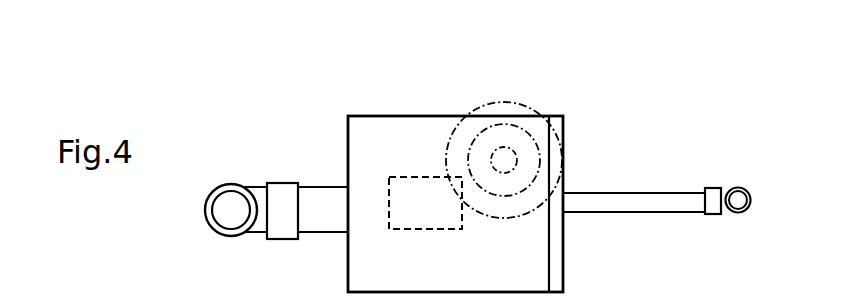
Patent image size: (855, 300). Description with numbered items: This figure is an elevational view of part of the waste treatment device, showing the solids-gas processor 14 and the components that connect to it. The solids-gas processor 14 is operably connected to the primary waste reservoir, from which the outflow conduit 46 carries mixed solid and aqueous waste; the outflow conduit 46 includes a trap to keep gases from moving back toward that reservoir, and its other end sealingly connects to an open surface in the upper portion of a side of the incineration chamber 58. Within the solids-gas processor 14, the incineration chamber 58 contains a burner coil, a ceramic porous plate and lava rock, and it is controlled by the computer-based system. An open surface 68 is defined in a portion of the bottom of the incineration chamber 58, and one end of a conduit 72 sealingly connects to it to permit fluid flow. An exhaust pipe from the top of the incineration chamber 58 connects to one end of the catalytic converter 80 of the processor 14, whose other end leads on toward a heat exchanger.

The solids-gas processor 14 is at (159, 87).
The outflow conduit 46 is at (212, 228).
The incineration chamber 58 is at (347, 140).
The open surface 68 is at (567, 207).
The conduit 72 is at (713, 188).
The catalytic converter 80 is at (452, 137).